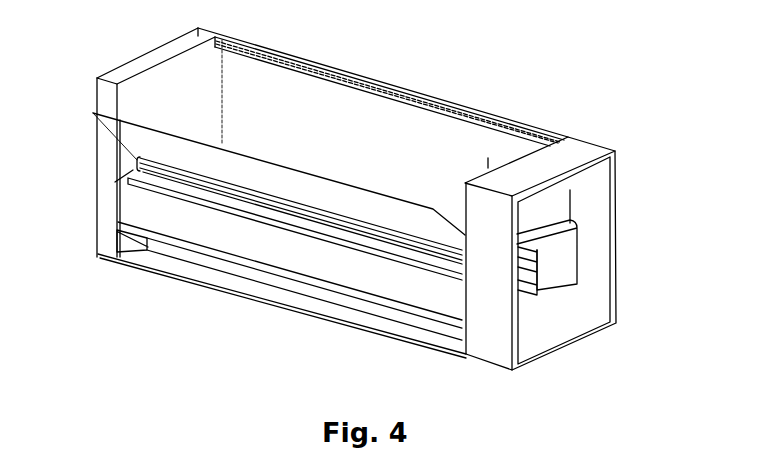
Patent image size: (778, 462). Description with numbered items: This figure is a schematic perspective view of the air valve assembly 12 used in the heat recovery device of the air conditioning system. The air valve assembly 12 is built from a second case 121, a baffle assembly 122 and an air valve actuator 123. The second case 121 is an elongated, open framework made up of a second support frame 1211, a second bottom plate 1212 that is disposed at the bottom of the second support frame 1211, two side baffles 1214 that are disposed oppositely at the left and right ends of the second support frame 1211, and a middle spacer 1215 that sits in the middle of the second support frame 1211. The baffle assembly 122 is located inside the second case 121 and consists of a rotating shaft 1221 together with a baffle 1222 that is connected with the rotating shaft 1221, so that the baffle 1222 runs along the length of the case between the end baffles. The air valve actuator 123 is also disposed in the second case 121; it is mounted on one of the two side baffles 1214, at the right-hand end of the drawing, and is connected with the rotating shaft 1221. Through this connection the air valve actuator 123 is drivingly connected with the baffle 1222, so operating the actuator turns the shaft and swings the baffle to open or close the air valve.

The air valve assembly 12 is at (467, 114).
The second case 121 is at (481, 283).
The second support frame 1211 is at (108, 222).
The second bottom plate 1212 is at (321, 317).
The side baffle 1214 is at (121, 160).
The middle spacer 1215 is at (282, 215).
The baffle assembly 122 is at (272, 183).
The rotating shaft 1221 is at (520, 290).
The baffle 1222 is at (222, 166).
The air valve actuator 123 is at (550, 270).